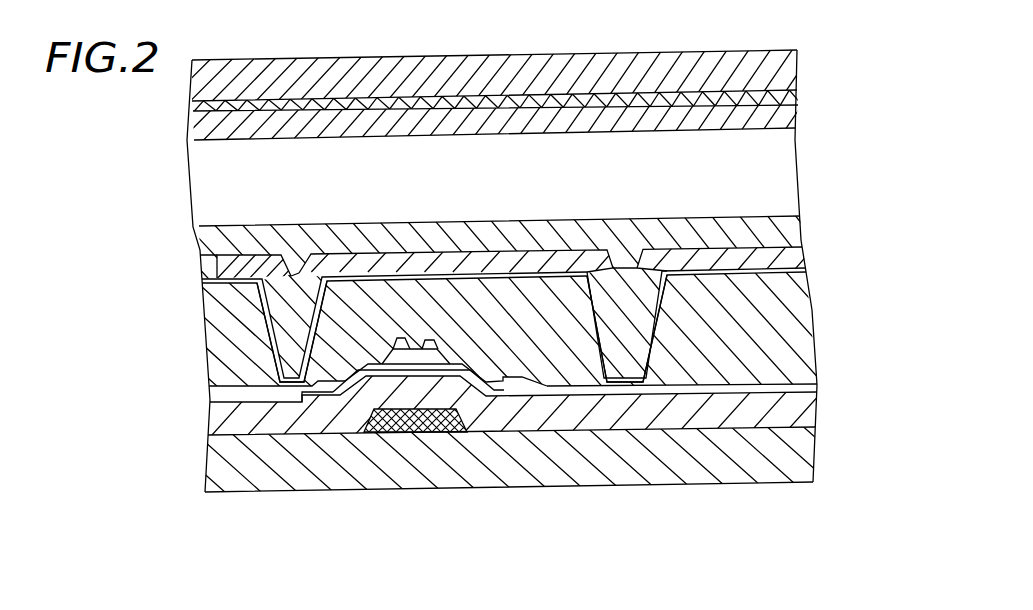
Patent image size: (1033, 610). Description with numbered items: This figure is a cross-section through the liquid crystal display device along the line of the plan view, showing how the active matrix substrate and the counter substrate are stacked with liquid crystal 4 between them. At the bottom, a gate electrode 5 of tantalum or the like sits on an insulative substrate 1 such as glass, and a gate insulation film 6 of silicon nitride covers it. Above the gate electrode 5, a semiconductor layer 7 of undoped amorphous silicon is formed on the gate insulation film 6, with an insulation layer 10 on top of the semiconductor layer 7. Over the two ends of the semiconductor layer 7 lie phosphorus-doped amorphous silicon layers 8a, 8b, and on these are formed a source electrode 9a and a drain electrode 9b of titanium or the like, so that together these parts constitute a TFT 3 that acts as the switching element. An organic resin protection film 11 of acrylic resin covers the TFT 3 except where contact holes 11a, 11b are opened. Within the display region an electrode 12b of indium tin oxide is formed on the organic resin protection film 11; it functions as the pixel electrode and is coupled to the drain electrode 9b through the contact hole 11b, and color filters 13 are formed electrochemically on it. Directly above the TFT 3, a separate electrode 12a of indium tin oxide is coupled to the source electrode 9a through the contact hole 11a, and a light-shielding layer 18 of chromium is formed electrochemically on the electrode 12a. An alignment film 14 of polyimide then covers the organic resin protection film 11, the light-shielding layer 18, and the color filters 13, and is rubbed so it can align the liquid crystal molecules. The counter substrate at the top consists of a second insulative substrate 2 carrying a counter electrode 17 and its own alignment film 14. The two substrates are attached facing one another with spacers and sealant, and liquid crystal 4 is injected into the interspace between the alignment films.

The insulative substrate 1 is at (798, 462).
The insulative substrate 2 is at (795, 73).
The TFT 3 is at (387, 437).
The liquid crystal 4 is at (795, 180).
The gate electrode 5 is at (440, 433).
The gate insulation film 6 is at (813, 411).
The semiconductor layer 7 is at (337, 398).
The n+ a-Si layer 8a is at (317, 402).
The n+ a-Si layer 8b is at (510, 393).
The source electrode 9a is at (222, 393).
The drain electrode 9b is at (813, 374).
The insulation layer 10 is at (410, 355).
The organic resin protection film 11 is at (807, 340).
The contact hole 11a is at (235, 330).
The contact hole 11b is at (607, 328).
The electrode 12a is at (227, 289).
The electrode 12b is at (803, 277).
The color filters 13 is at (800, 250).
The alignment film 14 is at (793, 123).
The counter electrode 17 is at (794, 97).
The light-shielding layer 18 is at (228, 267).